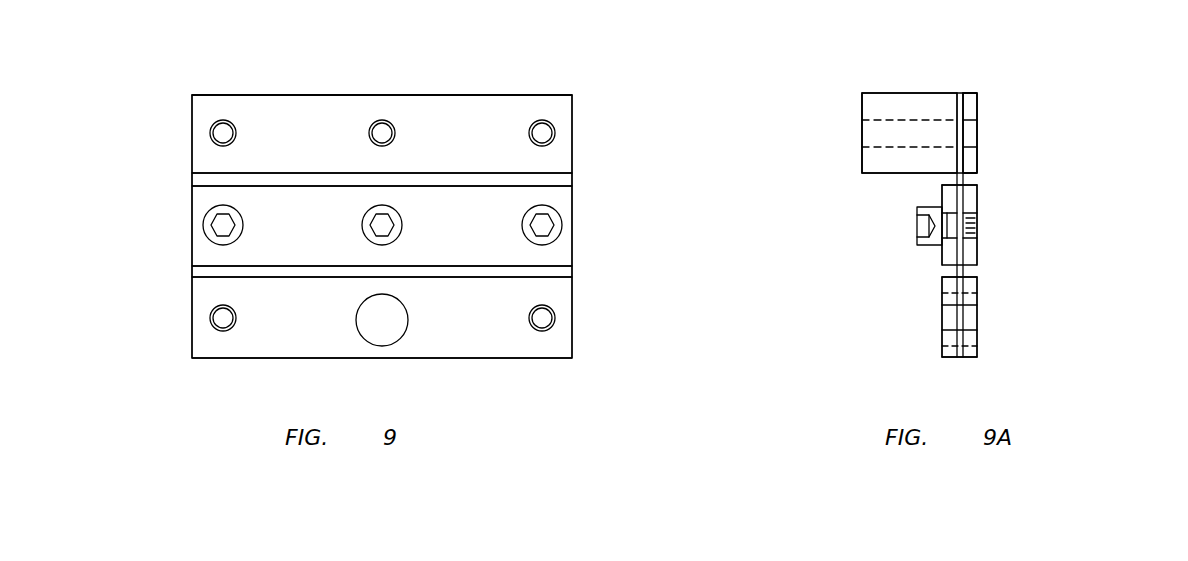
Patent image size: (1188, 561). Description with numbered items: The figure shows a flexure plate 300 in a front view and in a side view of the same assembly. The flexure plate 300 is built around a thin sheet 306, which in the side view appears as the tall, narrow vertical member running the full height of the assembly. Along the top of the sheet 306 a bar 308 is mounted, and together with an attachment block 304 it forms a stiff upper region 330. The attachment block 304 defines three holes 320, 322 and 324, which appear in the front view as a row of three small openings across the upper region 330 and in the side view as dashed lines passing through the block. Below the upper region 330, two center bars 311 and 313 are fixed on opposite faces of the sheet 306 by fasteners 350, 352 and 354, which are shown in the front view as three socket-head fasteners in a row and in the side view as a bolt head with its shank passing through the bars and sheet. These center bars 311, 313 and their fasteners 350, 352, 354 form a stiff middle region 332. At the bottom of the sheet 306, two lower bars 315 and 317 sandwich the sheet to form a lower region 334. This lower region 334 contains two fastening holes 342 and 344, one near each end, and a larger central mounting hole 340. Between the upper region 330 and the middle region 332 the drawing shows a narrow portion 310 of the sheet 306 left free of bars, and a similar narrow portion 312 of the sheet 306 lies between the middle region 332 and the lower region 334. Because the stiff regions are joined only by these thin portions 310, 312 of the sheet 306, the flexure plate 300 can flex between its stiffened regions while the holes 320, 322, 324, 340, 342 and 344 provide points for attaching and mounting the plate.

In FIG. 9, the flexure plate 300 is at (168, 220).
In FIG. 9A, the flexure plate 300 is at (972, 80).
In FIG. 9, the attachment block 304 is at (352, 90).
In FIG. 9A, the attachment block 304 is at (876, 92).
In FIG. 9A, the sheet 306 is at (960, 362).
In FIG. 9A, the bar 308 is at (978, 108).
In FIG. 9, the upper gap 310 is at (180, 179).
In FIG. 9A, the upper gap 310 is at (988, 181).
In FIG. 9A, the center bar 311 is at (950, 196).
In FIG. 9, the lower gap 312 is at (185, 270).
In FIG. 9A, the lower gap 312 is at (982, 272).
In FIG. 9A, the center bar 313 is at (978, 250).
In FIG. 9A, the lower bar 315 is at (942, 350).
In FIG. 9A, the lower bar 317 is at (978, 283).
In FIG. 9, the hole 320 is at (217, 121).
In FIG. 9, the hole 322 is at (395, 125).
In FIG. 9, the hole 324 is at (553, 121).
In FIG. 9A, the hole 324 is at (852, 137).
In FIG. 9, the upper region 330 is at (176, 125).
In FIG. 9A, the upper region 330 is at (1047, 118).
In FIG. 9A, the middle region 332 is at (992, 208).
In FIG. 9, the lower region 334 is at (185, 335).
In FIG. 9A, the lower region 334 is at (1048, 327).
In FIG. 9, the mounting hole 340 is at (350, 324).
In FIG. 9A, the mounting hole 340 is at (985, 336).
In FIG. 9, the fastening hole 342 is at (214, 336).
In FIG. 9, the fastening hole 344 is at (563, 334).
In FIG. 9A, the fastening hole 344 is at (932, 316).
In FIG. 9, the fastener 350 is at (556, 212).
In FIG. 9A, the fastener 350 is at (916, 240).
In FIG. 9, the fastener 352 is at (402, 222).
In FIG. 9, the fastener 354 is at (243, 232).